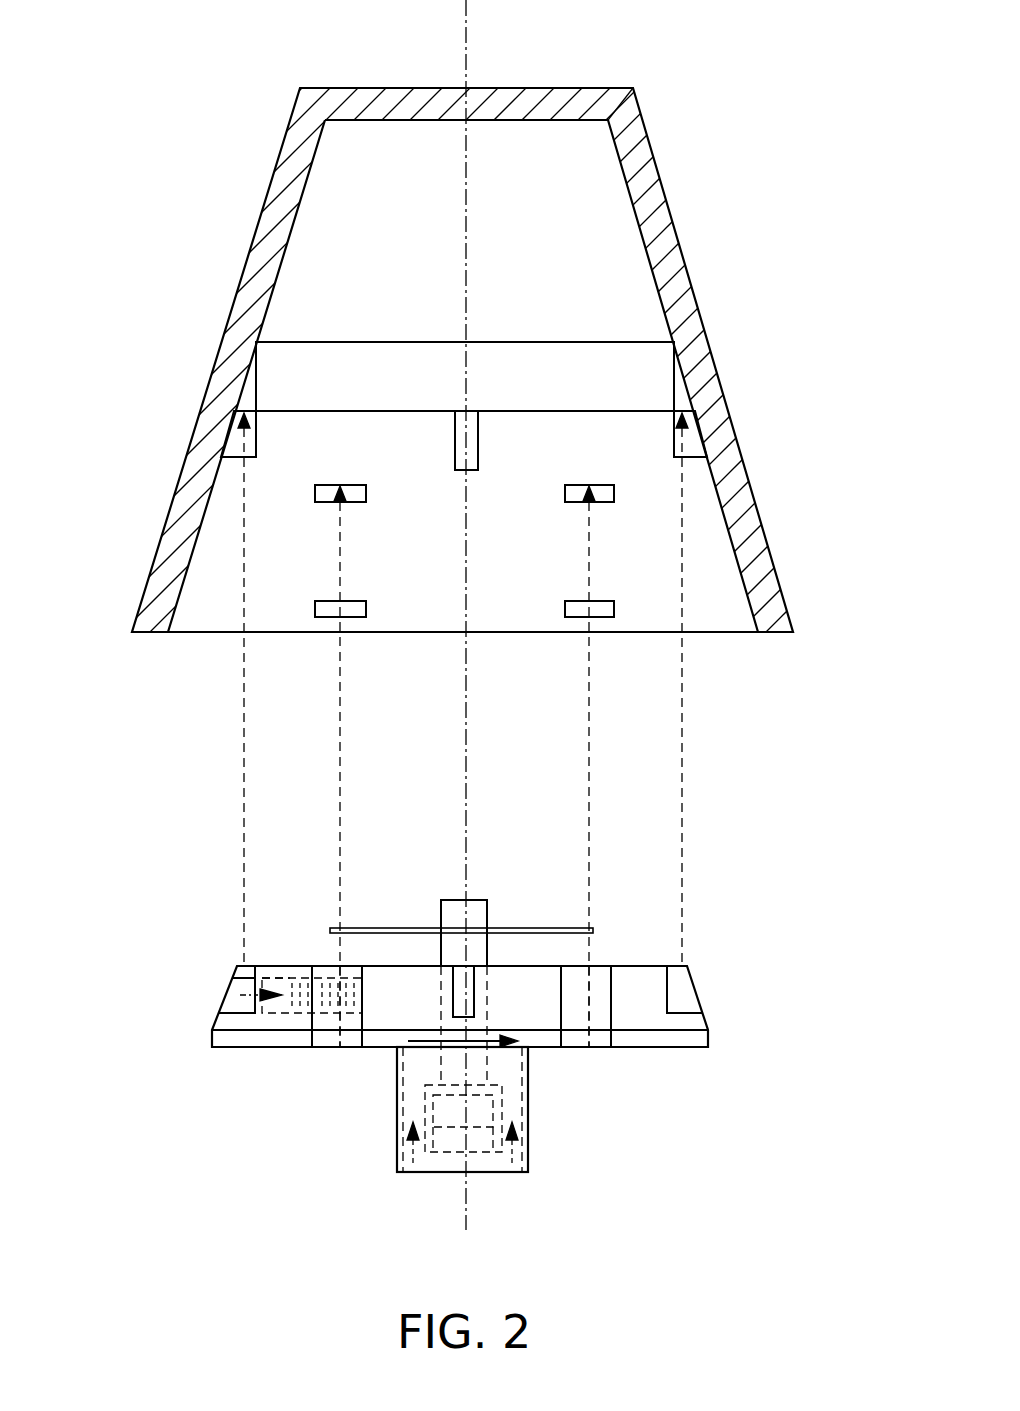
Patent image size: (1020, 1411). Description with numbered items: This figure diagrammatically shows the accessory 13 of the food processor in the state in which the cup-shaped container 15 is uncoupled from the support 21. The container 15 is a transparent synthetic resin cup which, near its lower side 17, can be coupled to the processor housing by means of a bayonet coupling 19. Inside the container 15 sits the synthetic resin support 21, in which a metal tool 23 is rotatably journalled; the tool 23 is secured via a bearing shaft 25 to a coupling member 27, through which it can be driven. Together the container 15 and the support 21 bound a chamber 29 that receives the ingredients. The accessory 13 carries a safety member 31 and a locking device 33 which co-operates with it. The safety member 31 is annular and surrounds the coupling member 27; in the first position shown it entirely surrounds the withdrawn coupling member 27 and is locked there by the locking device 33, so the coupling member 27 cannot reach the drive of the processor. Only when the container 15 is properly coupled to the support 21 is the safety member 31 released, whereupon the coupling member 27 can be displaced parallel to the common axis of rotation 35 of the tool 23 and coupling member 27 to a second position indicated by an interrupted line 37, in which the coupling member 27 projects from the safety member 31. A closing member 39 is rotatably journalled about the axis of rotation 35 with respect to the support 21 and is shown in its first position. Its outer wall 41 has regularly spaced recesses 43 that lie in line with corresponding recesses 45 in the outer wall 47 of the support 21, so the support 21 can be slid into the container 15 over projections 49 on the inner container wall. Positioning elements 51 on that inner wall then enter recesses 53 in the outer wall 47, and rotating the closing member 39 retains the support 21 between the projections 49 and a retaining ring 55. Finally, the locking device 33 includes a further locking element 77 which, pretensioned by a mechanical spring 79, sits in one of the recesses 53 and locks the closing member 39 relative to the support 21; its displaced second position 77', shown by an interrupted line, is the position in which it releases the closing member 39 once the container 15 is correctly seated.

The accessory 13 is at (108, 929).
The cup-shaped container 15 is at (270, 232).
The lower side 17 is at (731, 637).
The bayonet coupling 19 is at (356, 619).
The support 21 is at (640, 1020).
The tool 23 is at (517, 928).
The bearing shaft 25 is at (490, 1000).
The coupling member 27 is at (500, 1108).
The chamber 29 is at (612, 204).
The safety member 31 is at (397, 1120).
The locking device 33 is at (748, 1000).
The axis of rotation 35 is at (466, 5).
The interrupted line 37 is at (482, 1160).
The closing member 39 is at (215, 1037).
The outer wall 41 is at (370, 1047).
The recesses 43 is at (323, 1047).
The recesses 45 is at (323, 980).
The outer wall 47 is at (410, 978).
The projections 49 is at (330, 483).
The positioning elements 51 is at (232, 445).
The recesses 53 is at (240, 970).
The retaining ring 55 is at (374, 352).
The further locking element 77 is at (220, 996).
The second position of further locking element 77' is at (236, 944).
The mechanical spring 79 is at (295, 1018).